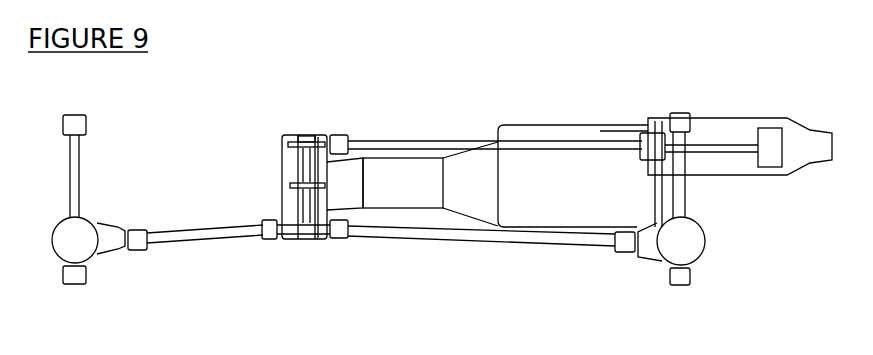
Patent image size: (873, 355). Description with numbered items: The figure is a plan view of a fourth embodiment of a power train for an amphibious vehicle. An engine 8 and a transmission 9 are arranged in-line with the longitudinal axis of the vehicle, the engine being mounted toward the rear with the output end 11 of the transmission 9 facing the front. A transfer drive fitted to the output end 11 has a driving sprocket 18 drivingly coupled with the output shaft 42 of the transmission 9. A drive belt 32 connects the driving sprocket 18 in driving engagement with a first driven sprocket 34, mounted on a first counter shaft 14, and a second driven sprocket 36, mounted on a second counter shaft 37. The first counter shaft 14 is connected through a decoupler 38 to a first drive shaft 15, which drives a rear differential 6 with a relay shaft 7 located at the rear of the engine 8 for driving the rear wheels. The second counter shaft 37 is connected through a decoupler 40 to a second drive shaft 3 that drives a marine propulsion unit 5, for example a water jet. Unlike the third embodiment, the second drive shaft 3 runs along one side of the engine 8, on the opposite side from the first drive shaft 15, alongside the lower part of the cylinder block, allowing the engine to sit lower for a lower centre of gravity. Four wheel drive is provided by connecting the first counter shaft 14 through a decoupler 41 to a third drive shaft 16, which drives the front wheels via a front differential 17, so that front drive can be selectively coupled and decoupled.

The second drive shaft 3 is at (426, 135).
The marine propulsion unit 5 is at (767, 118).
The rear differential 6 is at (683, 245).
The relay shaft 7 is at (680, 187).
The engine 8 is at (575, 199).
The transmission 9 is at (408, 196).
The output end 11 is at (356, 196).
The first counter shaft 14 is at (292, 240).
The first drive shaft 15 is at (471, 240).
The third drive shaft 16 is at (192, 235).
The front differential 17 is at (70, 237).
The driving sprocket 18 is at (300, 178).
The drive belt 32 is at (303, 162).
The first driven sprocket 34 is at (305, 239).
The second driven sprocket 36 is at (303, 135).
The second counter shaft 37 is at (285, 137).
The decoupler 38 is at (337, 238).
The decoupler 40 is at (340, 136).
The decoupler 41 is at (267, 240).
The output shaft 42 is at (285, 188).